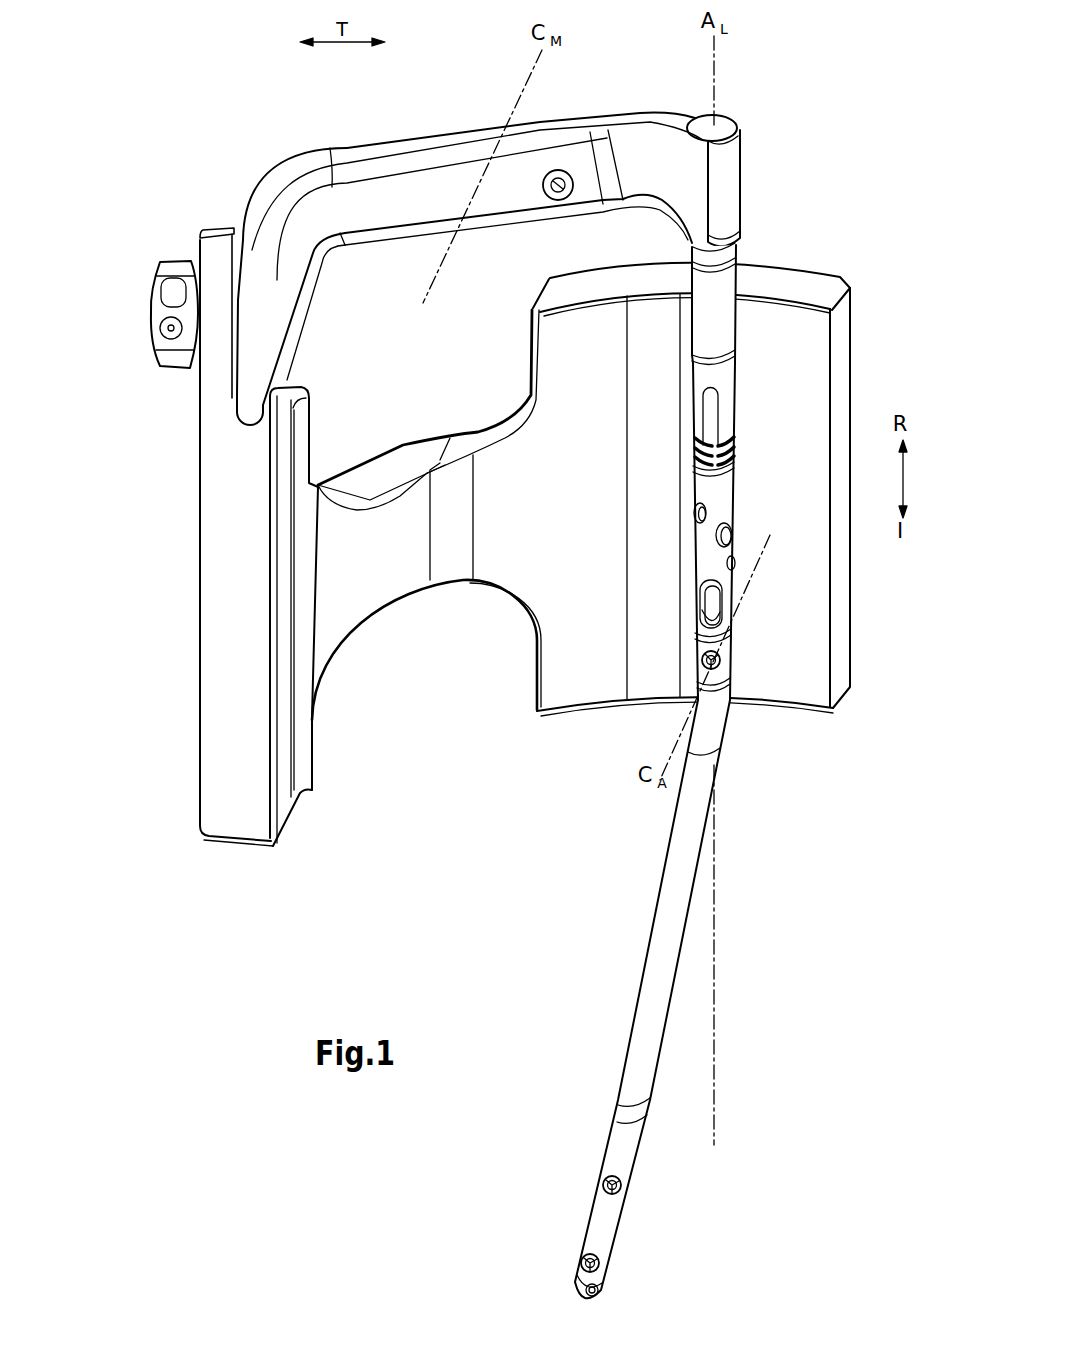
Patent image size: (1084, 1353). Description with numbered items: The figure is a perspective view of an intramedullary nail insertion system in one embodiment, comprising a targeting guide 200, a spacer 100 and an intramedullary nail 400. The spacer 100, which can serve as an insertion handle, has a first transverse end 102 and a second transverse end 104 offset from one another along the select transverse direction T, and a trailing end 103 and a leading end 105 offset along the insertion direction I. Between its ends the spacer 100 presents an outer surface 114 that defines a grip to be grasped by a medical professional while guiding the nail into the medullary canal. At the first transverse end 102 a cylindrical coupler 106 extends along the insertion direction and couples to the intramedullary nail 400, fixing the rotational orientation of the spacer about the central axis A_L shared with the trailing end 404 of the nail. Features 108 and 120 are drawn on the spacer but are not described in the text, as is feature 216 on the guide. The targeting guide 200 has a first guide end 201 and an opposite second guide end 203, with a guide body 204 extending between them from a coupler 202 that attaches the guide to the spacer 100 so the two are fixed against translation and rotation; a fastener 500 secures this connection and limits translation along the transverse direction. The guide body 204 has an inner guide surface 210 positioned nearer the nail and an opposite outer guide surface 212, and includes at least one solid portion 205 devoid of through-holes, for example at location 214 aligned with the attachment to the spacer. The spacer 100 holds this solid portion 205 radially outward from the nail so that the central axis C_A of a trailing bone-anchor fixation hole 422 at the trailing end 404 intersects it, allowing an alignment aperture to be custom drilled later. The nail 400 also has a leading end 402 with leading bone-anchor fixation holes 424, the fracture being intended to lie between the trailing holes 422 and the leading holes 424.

The spacer 100 is at (432, 128).
The first transverse end 102 is at (663, 74).
The trailing end 103 is at (752, 132).
The second transverse end 104 is at (272, 143).
The leading end 105 is at (762, 413).
The coupler 106 is at (733, 463).
The handle vertical arm 108 is at (323, 270).
The outer surface 114 is at (498, 197).
The handle inner surface 120 is at (277, 277).
The targeting guide 200 is at (445, 597).
The first guide end 201 is at (188, 241).
The coupler 202 is at (215, 360).
The second guide end 203 is at (176, 806).
The guide body 204 is at (778, 688).
The solid portion 205 is at (803, 660).
The inner guide surface 210 is at (567, 663).
The outer guide surface 212 is at (797, 268).
The solid portion location 214 is at (225, 733).
The arch cutout 216 is at (567, 549).
The intramedullary nail 400 is at (608, 965).
The leading end 402 is at (572, 1190).
The trailing end 404 is at (745, 504).
The trailing bone-anchor fixation holes 422 is at (732, 543).
The leading bone-anchor fixation holes 424 is at (598, 1286).
The fastener 500 is at (157, 317).